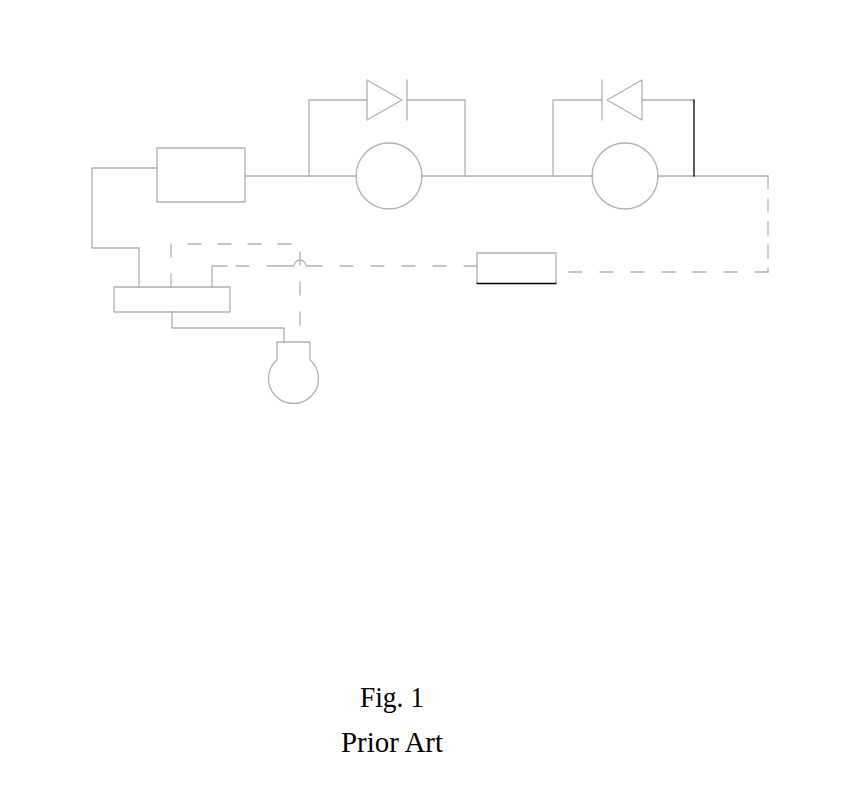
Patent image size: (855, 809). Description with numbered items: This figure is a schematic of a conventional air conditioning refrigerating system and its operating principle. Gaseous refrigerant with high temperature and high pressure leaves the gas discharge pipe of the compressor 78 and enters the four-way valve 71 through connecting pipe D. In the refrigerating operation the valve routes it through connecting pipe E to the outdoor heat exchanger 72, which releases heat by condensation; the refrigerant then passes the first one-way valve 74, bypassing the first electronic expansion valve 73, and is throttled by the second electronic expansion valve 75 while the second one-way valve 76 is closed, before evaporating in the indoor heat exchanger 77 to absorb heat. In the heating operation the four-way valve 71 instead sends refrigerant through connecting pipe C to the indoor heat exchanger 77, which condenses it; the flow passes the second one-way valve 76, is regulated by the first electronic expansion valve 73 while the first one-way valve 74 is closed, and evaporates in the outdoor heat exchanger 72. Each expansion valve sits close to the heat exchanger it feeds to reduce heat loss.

The four-way valve 71 is at (118, 297).
The outdoor heat exchanger 72 is at (187, 162).
The first electronic expansion valve 73 is at (368, 192).
The first one-way valve 74 is at (370, 82).
The second electronic expansion valve 75 is at (598, 190).
The second one-way valve 76 is at (635, 90).
The indoor heat exchanger 77 is at (527, 320).
The compressor 78 is at (300, 433).